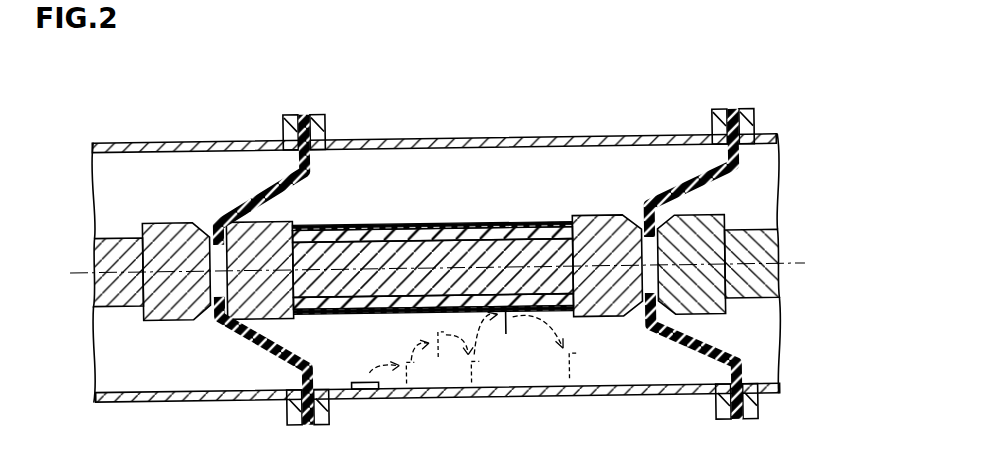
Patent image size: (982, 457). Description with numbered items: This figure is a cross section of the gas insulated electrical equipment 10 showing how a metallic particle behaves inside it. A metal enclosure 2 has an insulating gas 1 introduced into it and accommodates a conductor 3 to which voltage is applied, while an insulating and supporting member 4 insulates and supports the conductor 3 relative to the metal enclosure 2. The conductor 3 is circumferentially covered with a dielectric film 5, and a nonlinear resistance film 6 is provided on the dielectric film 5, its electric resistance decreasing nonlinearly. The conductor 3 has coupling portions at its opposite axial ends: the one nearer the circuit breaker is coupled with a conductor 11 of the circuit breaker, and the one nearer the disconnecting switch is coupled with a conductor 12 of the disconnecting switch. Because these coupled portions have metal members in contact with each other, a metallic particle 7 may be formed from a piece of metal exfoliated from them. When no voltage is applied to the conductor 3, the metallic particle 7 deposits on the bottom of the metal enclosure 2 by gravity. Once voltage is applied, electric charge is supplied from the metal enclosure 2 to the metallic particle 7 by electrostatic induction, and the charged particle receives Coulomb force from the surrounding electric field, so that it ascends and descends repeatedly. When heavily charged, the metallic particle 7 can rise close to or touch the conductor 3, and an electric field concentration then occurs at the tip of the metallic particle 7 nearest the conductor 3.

The insulating gas 1 is at (557, 182).
The metal enclosure 2 is at (470, 389).
The conductor 3 is at (402, 252).
The insulating and supporting member 4 is at (262, 343).
The dielectric film 5 is at (450, 237).
The nonlinear resistance film 6 is at (510, 228).
The metallic particle 7 is at (362, 389).
The gas insulated electrical equipment 10 is at (674, 89).
The conductor of the circuit breaker 11 is at (117, 305).
The conductor of the disconnecting switch 12 is at (757, 303).